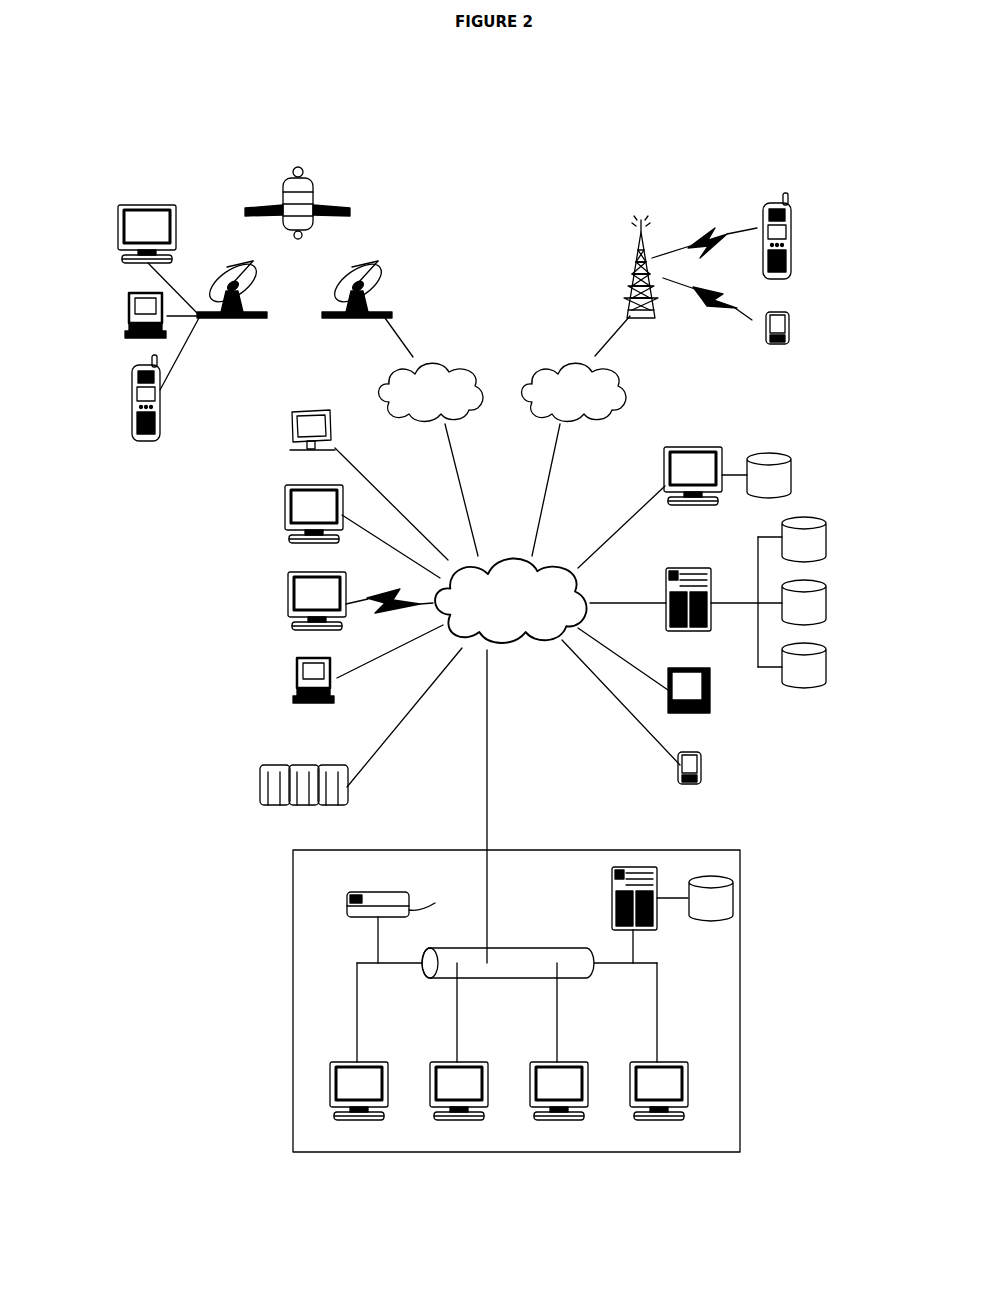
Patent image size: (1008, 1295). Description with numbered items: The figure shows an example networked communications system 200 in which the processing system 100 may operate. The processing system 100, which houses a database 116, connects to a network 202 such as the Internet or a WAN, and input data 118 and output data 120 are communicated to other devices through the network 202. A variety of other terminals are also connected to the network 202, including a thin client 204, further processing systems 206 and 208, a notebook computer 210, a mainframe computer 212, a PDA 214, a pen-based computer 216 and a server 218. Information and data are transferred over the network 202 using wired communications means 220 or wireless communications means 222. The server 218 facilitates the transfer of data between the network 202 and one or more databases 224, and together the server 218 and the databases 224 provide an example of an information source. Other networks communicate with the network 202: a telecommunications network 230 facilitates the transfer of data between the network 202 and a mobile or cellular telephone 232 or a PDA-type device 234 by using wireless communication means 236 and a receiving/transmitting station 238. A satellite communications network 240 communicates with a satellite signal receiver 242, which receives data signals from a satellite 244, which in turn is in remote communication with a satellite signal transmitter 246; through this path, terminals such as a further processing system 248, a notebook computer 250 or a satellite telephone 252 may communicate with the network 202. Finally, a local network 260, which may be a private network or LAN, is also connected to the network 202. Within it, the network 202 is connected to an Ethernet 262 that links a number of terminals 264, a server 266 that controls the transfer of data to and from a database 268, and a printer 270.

The networked communications system 200 is at (538, 158).
The processing system 100 is at (700, 447).
The database 116 is at (769, 475).
The input data 118 is at (617, 522).
The output data 120 is at (614, 512).
The network 202 is at (510, 600).
The thin client 204 is at (282, 452).
The further processing system 206 is at (285, 515).
The further processing system 208 is at (288, 602).
The notebook computer 210 is at (293, 683).
The mainframe computer 212 is at (260, 783).
The PDA 214 is at (702, 768).
The pen-based computer 216 is at (712, 690).
The server 218 is at (680, 568).
The wired communications means 220 is at (391, 546).
The wireless communications means 222 is at (389, 613).
The databases 224 is at (804, 602).
The telecommunications network 230 is at (574, 392).
The mobile or cellular telephone 232 is at (795, 232).
The PDA-type device 234 is at (790, 330).
The wireless communication means 236 is at (704, 274).
The receiving/transmitting station 238 is at (630, 283).
The satellite communications network 240 is at (431, 392).
The satellite signal receiver 242 is at (392, 280).
The satellite 244 is at (318, 208).
The satellite signal transmitter 246 is at (222, 320).
The further processing system 248 is at (143, 205).
The notebook computer 250 is at (126, 318).
The satellite telephone 252 is at (146, 443).
The local network 260 is at (293, 935).
The Ethernet 262 is at (512, 950).
The terminals 264 is at (360, 1120).
The server 266 is at (612, 905).
The database 268 is at (711, 898).
The printer 270 is at (380, 890).